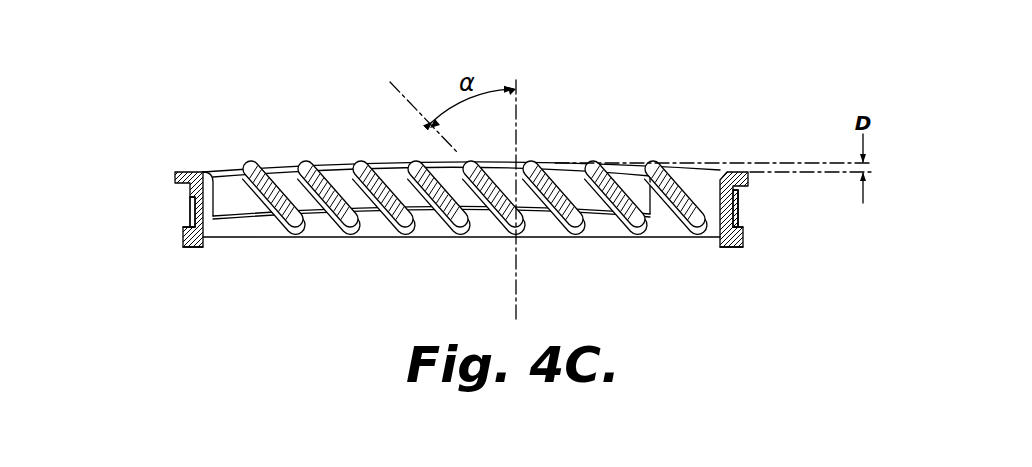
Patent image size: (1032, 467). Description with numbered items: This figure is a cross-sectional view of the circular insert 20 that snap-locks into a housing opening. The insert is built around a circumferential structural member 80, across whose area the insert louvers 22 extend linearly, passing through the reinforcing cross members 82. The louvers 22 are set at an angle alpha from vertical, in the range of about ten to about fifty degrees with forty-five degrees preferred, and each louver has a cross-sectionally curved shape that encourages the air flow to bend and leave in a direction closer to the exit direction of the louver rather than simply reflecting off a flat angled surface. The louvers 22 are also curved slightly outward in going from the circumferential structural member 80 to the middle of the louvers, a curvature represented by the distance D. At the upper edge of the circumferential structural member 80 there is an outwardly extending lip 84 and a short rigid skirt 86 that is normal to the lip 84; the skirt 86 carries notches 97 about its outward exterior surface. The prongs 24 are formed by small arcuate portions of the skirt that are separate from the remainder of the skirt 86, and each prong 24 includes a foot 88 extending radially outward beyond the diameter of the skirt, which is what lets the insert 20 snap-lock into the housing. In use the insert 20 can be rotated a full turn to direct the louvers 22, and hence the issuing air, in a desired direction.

The circular insert 20 is at (736, 172).
The insert louvers 22 is at (475, 147).
The prongs 24 is at (184, 231).
The circumferential structural member 80 is at (604, 238).
The reinforcing cross members 82 is at (629, 182).
The lip 84 is at (176, 178).
The skirt 86 is at (188, 206).
The foot 88 is at (188, 247).
The notches 97 is at (739, 210).